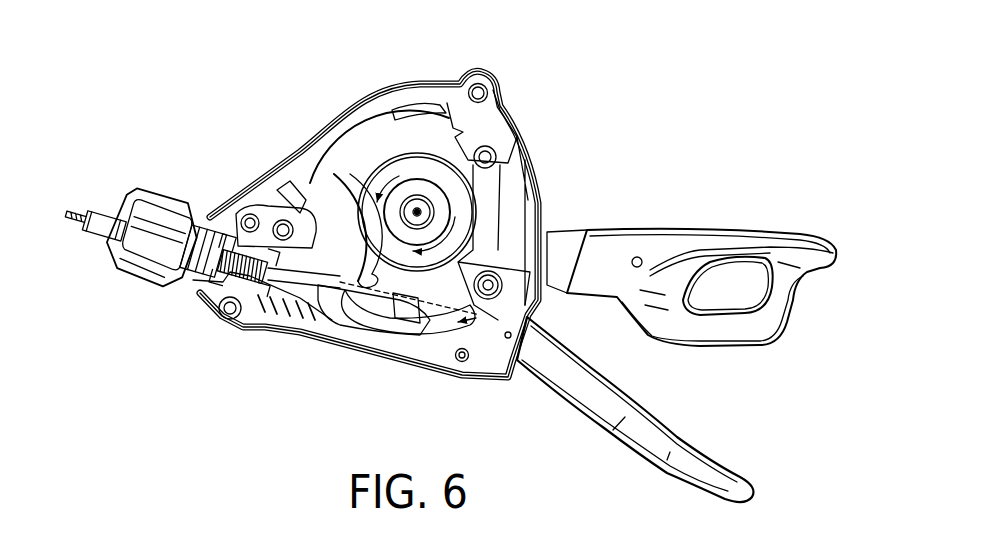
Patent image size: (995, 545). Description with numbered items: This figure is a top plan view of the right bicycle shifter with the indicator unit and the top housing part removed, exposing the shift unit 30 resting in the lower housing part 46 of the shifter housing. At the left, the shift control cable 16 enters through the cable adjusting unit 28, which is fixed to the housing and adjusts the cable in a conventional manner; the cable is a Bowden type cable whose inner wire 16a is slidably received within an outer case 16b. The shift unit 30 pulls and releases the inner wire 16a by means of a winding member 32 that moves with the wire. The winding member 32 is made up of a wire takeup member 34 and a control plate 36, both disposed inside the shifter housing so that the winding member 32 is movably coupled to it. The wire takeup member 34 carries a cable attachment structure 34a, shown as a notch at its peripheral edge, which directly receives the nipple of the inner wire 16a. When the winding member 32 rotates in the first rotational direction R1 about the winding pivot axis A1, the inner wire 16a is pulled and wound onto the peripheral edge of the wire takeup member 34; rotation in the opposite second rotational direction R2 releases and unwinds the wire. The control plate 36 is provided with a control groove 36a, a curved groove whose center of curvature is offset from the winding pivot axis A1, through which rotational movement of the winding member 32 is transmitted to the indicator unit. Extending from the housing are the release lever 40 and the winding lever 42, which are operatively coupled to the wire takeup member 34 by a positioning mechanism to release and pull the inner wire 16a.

The shift control cable 16 is at (80, 102).
The inner wire 16a is at (73, 207).
The outer case 16b is at (100, 207).
The cable adjusting unit 28 is at (163, 192).
The shift unit 30 is at (307, 152).
The winding member 32 is at (273, 400).
The wire takeup member 34 is at (393, 330).
The cable attachment structure 34a is at (433, 300).
The control plate 36 is at (325, 287).
The control groove 36a is at (280, 183).
The release lever 40 is at (720, 220).
The winding lever 42 is at (720, 463).
The lower housing part 46 is at (242, 327).
The first rotational direction R1 is at (384, 168).
The second rotational direction R2 is at (455, 217).
The winding pivot axis A1 is at (417, 212).